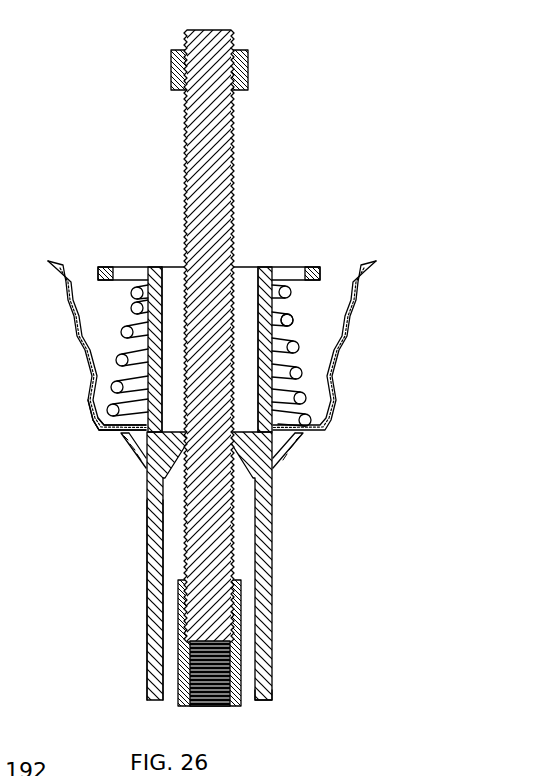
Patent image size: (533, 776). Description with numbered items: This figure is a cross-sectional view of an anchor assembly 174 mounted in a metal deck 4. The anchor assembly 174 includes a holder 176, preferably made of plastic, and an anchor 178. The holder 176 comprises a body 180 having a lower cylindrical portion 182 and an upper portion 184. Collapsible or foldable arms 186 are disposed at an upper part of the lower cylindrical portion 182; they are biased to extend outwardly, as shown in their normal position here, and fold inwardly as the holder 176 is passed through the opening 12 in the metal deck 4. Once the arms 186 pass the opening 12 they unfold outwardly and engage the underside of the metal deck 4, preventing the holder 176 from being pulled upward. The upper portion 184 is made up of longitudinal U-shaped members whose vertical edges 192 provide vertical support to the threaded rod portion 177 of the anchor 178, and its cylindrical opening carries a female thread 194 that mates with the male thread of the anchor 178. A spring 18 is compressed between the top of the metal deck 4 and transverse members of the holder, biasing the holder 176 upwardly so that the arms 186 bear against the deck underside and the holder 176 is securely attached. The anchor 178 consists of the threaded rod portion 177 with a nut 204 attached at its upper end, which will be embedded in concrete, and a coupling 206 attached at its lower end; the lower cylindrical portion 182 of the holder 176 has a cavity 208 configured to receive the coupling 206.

The metal deck 4 is at (340, 358).
The opening 12 is at (292, 424).
The spring 18 is at (290, 322).
The anchor assembly 174 is at (264, 107).
The holder 176 is at (140, 556).
The threaded rod portion 177 is at (231, 154).
The anchor 178 is at (186, 129).
The body 180 is at (274, 523).
The lower cylindrical portion 182 is at (272, 650).
The upper portion 184 is at (127, 350).
The arms 186 is at (128, 452).
The vertical edges 192 is at (188, 302).
The female thread 194 is at (98, 428).
The nut 204 is at (172, 58).
The coupling 206 is at (185, 655).
The cavity 208 is at (240, 563).